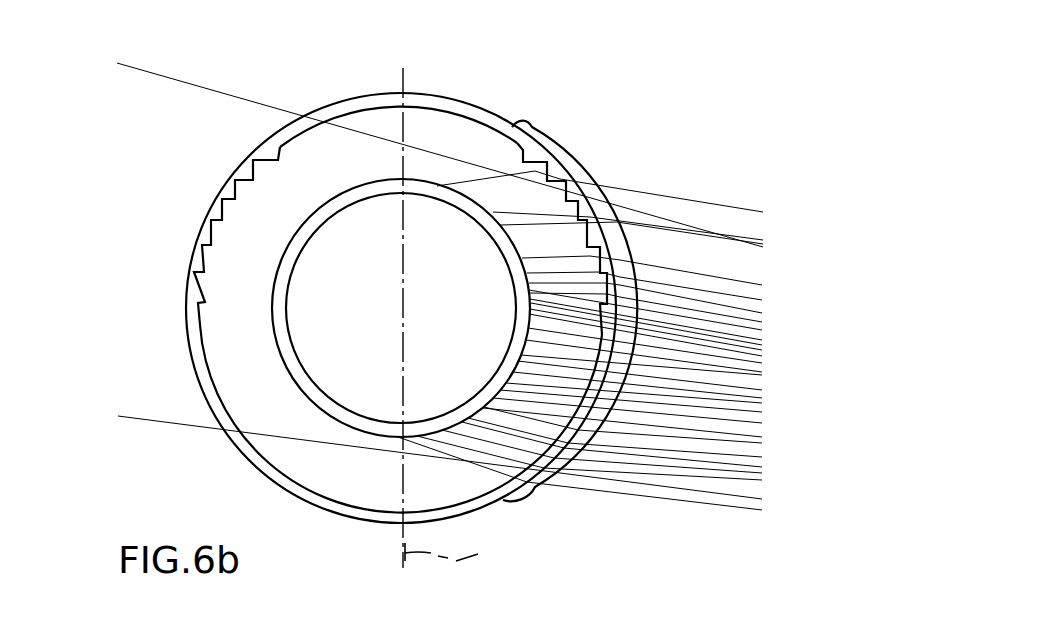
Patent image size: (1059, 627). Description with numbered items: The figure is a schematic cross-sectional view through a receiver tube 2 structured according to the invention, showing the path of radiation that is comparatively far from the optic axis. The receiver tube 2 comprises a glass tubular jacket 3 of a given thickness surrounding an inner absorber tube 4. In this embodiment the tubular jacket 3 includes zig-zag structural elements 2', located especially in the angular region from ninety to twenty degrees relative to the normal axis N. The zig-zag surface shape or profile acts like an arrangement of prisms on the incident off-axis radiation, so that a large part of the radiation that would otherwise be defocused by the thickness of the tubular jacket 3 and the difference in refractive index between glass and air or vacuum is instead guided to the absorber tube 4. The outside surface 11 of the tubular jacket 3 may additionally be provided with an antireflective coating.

The receiver tube 2 is at (344, 308).
The zig-zag structural elements 2' is at (196, 236).
The tubular jacket 3 is at (477, 120).
The absorber tube 4 is at (342, 421).
The outside surface 11 is at (560, 147).
The normal axis N is at (452, 556).